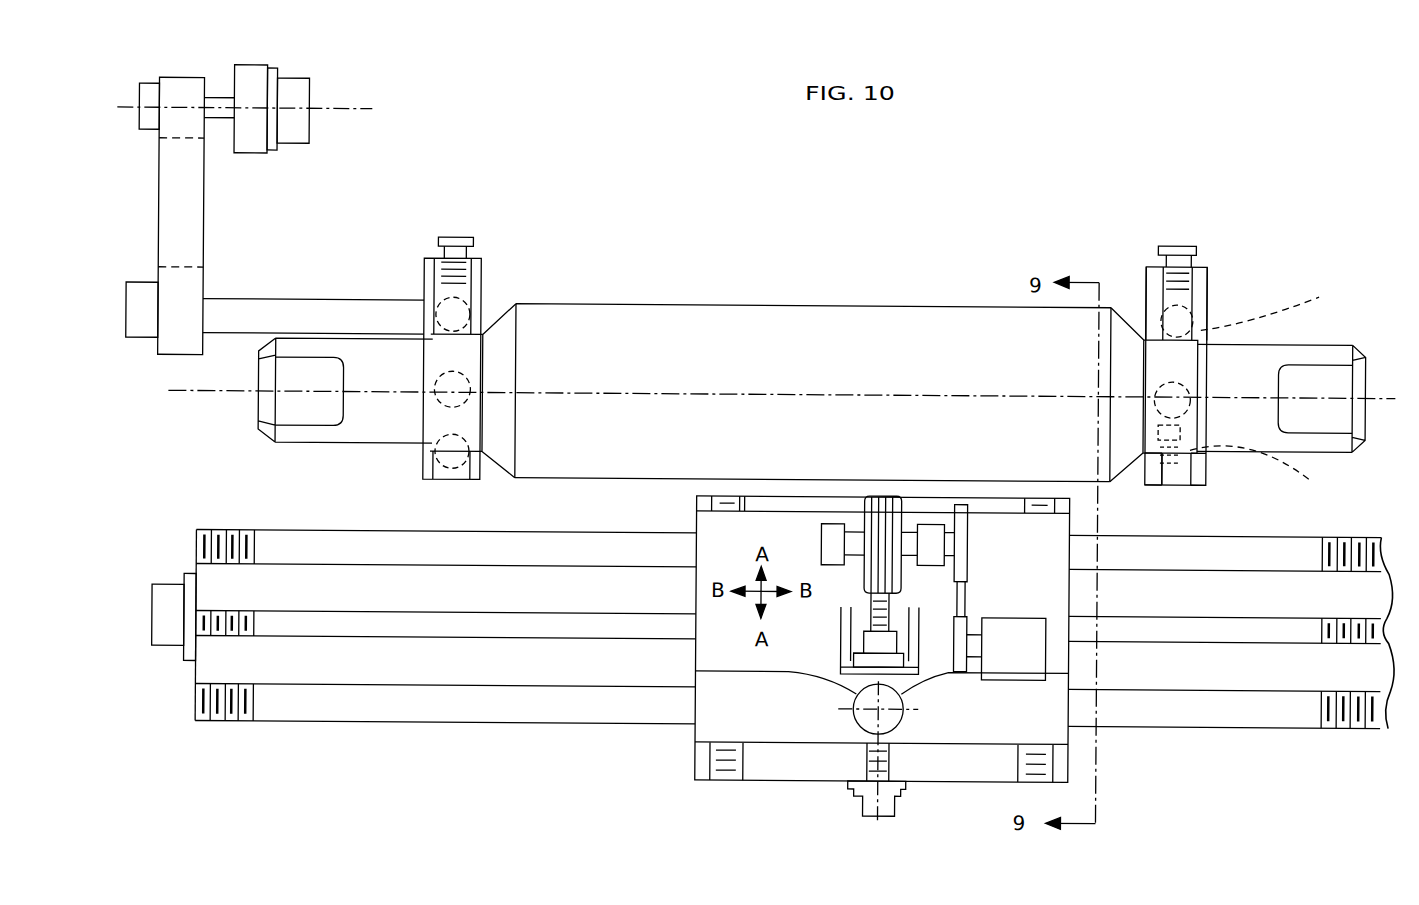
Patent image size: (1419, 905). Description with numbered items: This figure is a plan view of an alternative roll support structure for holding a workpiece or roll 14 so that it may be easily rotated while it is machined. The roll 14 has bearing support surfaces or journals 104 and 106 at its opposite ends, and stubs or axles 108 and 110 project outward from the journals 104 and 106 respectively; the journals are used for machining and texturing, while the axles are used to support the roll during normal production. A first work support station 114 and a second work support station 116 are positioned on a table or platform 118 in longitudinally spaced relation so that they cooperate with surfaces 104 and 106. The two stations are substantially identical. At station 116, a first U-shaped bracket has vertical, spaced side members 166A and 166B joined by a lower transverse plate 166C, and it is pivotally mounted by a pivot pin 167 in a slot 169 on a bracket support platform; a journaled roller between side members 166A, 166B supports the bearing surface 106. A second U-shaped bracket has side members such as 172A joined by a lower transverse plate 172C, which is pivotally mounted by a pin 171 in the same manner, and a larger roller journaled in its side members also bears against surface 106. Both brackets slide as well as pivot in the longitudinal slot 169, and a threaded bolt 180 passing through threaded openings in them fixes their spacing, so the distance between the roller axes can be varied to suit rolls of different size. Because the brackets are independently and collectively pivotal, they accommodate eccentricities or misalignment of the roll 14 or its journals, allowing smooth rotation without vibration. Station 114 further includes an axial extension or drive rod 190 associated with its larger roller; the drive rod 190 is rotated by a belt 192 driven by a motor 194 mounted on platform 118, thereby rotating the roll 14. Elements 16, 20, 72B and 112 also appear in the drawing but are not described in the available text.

The roll 14 is at (730, 325).
The cylinder housing 16 is at (810, 305).
The longitudinal axis 20 is at (668, 395).
The clamp side wall 72B is at (1147, 263).
The journal 104 is at (468, 367).
The journal 106 is at (1143, 365).
The stub or axle 108 is at (303, 446).
The stub or axle 110 is at (1305, 341).
The socket in left shaft end 112 is at (288, 377).
The first work support station 114 is at (484, 286).
The second work support station 116 is at (1210, 293).
The table or platform 118 is at (215, 461).
The side member 166A is at (1200, 466).
The side member 166B is at (1148, 485).
The lower transverse plate 166C is at (1180, 485).
The pivot pin 167 is at (1264, 476).
The slot 169 is at (1140, 442).
The pin 171 is at (1280, 304).
The side member 172A is at (1208, 265).
The lower transverse plate 172C is at (1183, 269).
The threaded bolt 180 is at (1180, 241).
The drive rod 190 is at (300, 302).
The belt 192 is at (190, 236).
The motor 194 is at (291, 147).